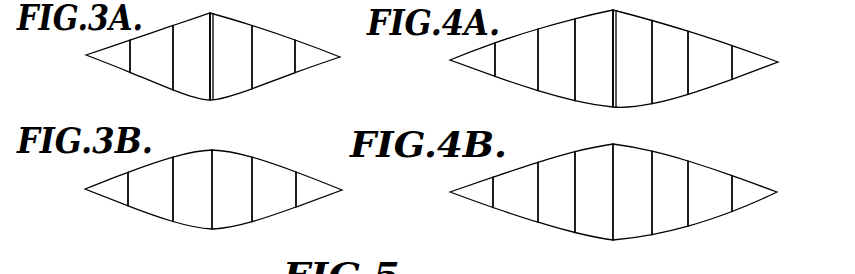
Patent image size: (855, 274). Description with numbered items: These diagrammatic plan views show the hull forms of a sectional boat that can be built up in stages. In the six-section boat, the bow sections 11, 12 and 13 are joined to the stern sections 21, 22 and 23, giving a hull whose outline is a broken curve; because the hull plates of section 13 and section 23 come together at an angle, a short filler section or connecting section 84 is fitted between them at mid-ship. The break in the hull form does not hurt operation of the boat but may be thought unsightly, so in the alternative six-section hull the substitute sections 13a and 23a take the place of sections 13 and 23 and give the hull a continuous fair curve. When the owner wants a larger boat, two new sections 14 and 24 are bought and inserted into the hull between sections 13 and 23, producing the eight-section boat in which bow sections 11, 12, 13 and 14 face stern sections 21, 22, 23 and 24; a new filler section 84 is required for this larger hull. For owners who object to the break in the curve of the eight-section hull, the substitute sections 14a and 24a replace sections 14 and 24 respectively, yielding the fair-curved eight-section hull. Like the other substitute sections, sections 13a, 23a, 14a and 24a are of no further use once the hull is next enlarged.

In FIG. 3A, the bow section 11 is at (318, 60).
In FIG. 3B, the bow section 11 is at (310, 192).
In FIG. 4A, the bow section 11 is at (757, 60).
In FIG. 4B, the bow section 11 is at (753, 195).
In FIG. 3A, the bow section 12 is at (280, 73).
In FIG. 3B, the bow section 12 is at (278, 200).
In FIG. 4A, the bow section 12 is at (717, 75).
In FIG. 4B, the bow section 12 is at (723, 205).
In FIG. 3A, the bow section 13 is at (240, 82).
In FIG. 4A, the bow section 13 is at (673, 87).
In FIG. 4B, the bow section 13 is at (668, 217).
In FIG. 3B, the substitute bow section 13a is at (235, 215).
In FIG. 4A, the bow section 14 is at (640, 97).
In FIG. 4B, the substitute bow section 14a is at (637, 220).
In FIG. 3A, the stern section 21 is at (118, 58).
In FIG. 3B, the stern section 21 is at (118, 190).
In FIG. 4A, the stern section 21 is at (482, 62).
In FIG. 4B, the stern section 21 is at (480, 192).
In FIG. 3A, the stern section 22 is at (163, 72).
In FIG. 3B, the stern section 22 is at (155, 200).
In FIG. 4A, the stern section 22 is at (527, 77).
In FIG. 4B, the stern section 22 is at (523, 205).
In FIG. 3A, the stern section 23 is at (200, 85).
In FIG. 4A, the stern section 23 is at (560, 82).
In FIG. 4B, the stern section 23 is at (565, 218).
In FIG. 3B, the substitute stern section 23a is at (193, 213).
In FIG. 4A, the stern section 24 is at (602, 92).
In FIG. 4B, the substitute stern section 24a is at (595, 218).
In FIG. 3A, the filler section 84 is at (210, 100).
In FIG. 4A, the filler section 84 is at (615, 108).